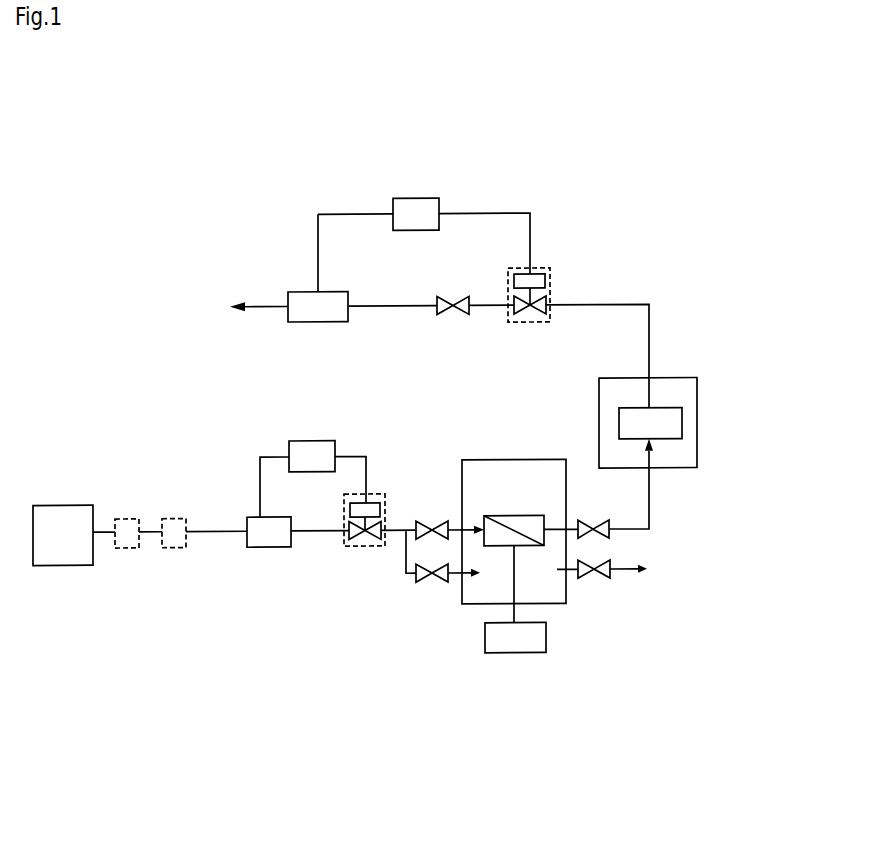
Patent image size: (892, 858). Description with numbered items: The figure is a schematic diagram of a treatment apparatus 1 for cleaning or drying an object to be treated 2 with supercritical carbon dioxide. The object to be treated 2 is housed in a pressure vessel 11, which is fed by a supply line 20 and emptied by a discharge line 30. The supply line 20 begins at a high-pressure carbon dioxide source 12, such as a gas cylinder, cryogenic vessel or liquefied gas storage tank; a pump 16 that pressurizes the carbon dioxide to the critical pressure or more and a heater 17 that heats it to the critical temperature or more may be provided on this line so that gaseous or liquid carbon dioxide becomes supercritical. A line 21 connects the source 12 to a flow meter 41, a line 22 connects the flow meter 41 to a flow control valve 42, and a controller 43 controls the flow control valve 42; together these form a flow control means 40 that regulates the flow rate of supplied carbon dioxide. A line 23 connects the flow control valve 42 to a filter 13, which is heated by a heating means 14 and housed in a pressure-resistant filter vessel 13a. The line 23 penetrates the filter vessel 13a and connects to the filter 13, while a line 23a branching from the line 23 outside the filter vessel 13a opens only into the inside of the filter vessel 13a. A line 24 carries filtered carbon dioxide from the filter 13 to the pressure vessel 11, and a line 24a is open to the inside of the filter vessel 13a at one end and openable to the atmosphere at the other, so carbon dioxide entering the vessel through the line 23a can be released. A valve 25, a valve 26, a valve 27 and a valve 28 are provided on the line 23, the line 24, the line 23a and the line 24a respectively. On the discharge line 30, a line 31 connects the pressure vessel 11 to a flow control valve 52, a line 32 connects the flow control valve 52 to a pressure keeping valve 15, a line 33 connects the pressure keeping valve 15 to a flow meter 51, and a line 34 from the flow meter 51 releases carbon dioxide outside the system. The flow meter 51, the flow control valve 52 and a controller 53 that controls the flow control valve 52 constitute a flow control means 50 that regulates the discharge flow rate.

The treatment apparatus 1 is at (448, 106).
The object to be treated 2 is at (660, 408).
The pressure vessel 11 is at (697, 415).
The high-pressure carbon dioxide source 12 is at (60, 503).
The filter 13 is at (510, 516).
The filter vessel 13a is at (462, 458).
The heating means 14 is at (518, 655).
The pressure keeping valve 15 is at (453, 314).
The pump 16 is at (125, 547).
The heater 17 is at (172, 547).
The supply line 20 is at (320, 632).
The line 21 is at (220, 531).
The line 22 is at (322, 531).
The line 23 is at (390, 537).
The line 23a is at (407, 580).
The line 24 is at (649, 511).
The line 24a is at (625, 570).
The valve 25 is at (432, 521).
The valve 26 is at (593, 521).
The valve 27 is at (442, 582).
The valve 28 is at (593, 578).
The discharge line 30 is at (531, 182).
The line 31 is at (575, 305).
The line 32 is at (482, 305).
The line 33 is at (372, 305).
The line 34 is at (258, 305).
The flow control means 40 is at (238, 450).
The flow meter 41 is at (268, 547).
The flow control valve 42 is at (370, 493).
The controller 43 is at (305, 440).
The flow control means 50 is at (350, 193).
The flow meter 51 is at (303, 322).
The flow control valve 52 is at (537, 270).
The controller 53 is at (412, 198).